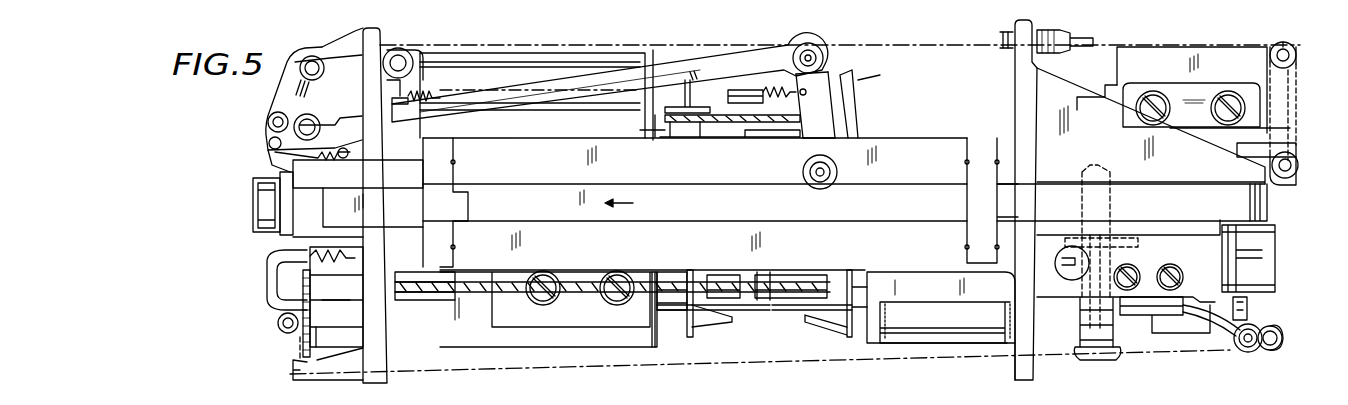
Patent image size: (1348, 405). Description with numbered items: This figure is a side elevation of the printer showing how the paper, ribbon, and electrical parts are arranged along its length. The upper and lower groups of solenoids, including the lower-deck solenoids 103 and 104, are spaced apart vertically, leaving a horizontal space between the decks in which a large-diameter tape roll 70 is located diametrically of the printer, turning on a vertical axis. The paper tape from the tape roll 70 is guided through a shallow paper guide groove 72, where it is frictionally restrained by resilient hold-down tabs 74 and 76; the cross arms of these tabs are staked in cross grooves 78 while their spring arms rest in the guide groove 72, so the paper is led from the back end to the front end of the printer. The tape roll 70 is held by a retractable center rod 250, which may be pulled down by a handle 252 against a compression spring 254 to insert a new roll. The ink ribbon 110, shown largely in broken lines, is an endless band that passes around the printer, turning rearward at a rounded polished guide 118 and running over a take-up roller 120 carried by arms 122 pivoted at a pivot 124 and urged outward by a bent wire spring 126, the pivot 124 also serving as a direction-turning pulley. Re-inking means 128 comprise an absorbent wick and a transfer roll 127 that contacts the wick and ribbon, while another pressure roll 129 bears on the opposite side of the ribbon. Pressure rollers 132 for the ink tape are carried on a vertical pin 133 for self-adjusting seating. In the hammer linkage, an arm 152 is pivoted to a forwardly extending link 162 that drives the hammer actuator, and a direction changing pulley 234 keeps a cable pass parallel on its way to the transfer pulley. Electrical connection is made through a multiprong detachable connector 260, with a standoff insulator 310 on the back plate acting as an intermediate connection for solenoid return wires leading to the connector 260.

The tape roll 70 is at (1257, 200).
The paper guide groove 72 is at (567, 193).
The resilient hold-down tab 74 is at (362, 200).
The resilient hold-down tab 76 is at (920, 198).
The cross grooves 78 is at (453, 162).
The solenoid 103 is at (525, 335).
The solenoid 104 is at (922, 296).
The ink ribbon 110 is at (1217, 44).
The rounded guide 118 is at (297, 373).
The take-up roller 120 is at (1290, 182).
The arms 122 is at (1300, 153).
The pivot 124 is at (1290, 48).
The bent wire spring 126 is at (1292, 110).
The transfer roll 127 is at (1248, 352).
The re-inking means 128 is at (1264, 351).
The pressure roll 129 is at (1281, 349).
The pressure rollers 132 is at (283, 333).
The vertical pin 133 is at (283, 285).
The arm 152 is at (817, 125).
The link 162 is at (667, 70).
The direction changing pulley 234 is at (722, 308).
The retractable center rod 250 is at (1112, 203).
The handle 252 is at (1100, 355).
The compression spring 254 is at (1080, 308).
The multiprong detachable connector 260 is at (1268, 272).
The standoff insulator 310 is at (1053, 42).